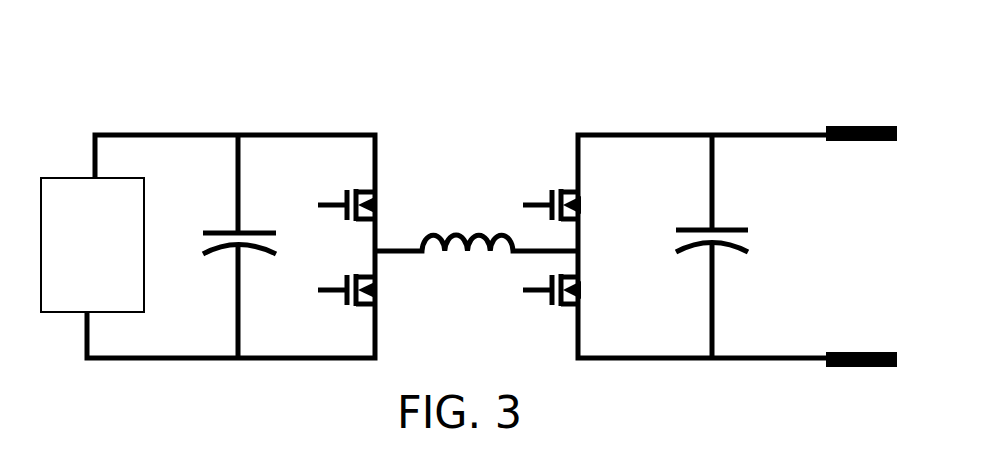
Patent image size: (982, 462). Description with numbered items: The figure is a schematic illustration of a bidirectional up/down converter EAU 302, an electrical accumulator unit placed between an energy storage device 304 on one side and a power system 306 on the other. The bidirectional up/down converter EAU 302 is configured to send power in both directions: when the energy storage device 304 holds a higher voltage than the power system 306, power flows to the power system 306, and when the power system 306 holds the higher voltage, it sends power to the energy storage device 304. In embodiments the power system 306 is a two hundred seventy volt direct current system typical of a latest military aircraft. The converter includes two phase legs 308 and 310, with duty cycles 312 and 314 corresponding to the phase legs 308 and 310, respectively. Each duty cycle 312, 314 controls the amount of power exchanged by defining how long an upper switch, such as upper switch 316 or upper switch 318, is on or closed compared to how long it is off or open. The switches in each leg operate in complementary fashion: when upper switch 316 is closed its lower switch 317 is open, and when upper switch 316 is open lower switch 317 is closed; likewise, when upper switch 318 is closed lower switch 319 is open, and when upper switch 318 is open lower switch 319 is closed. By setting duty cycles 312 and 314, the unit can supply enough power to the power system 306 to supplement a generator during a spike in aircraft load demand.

The bidirectional up/down converter EAU 302 is at (465, 141).
The energy storage device 304 is at (71, 176).
The power system 306 is at (866, 246).
The phase leg 308 is at (272, 161).
The phase leg 310 is at (668, 158).
The duty cycle 312 is at (312, 262).
The duty cycle 314 is at (633, 262).
The upper switch 316 is at (382, 207).
The lower switch 317 is at (385, 290).
The upper switch 318 is at (541, 188).
The lower switch 319 is at (543, 302).